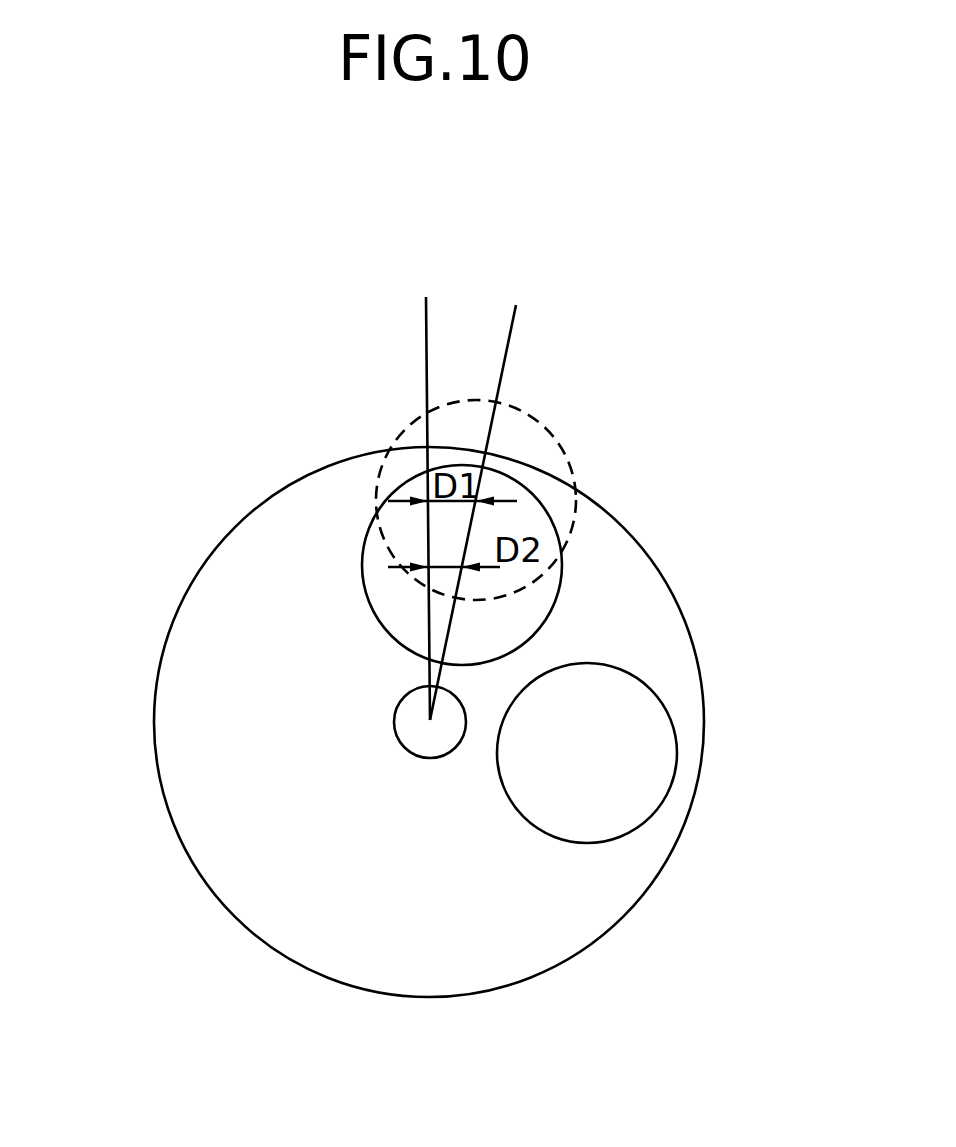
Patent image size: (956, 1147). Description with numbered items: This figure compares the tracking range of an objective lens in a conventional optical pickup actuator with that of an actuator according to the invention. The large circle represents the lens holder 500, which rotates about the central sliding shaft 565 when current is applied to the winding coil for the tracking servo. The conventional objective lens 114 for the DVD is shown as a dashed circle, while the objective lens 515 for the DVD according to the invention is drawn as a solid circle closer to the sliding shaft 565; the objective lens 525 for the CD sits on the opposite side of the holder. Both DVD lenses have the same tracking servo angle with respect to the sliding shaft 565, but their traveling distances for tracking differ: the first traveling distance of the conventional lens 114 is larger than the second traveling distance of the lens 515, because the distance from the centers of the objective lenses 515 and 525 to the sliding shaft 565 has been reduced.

The lens holder 500 is at (642, 607).
The objective lens for the DVD 515 is at (373, 567).
The conventional objective lens for the DVD 114 is at (542, 437).
The sliding shaft 565 is at (398, 729).
The objective lens for the CD 525 is at (657, 797).